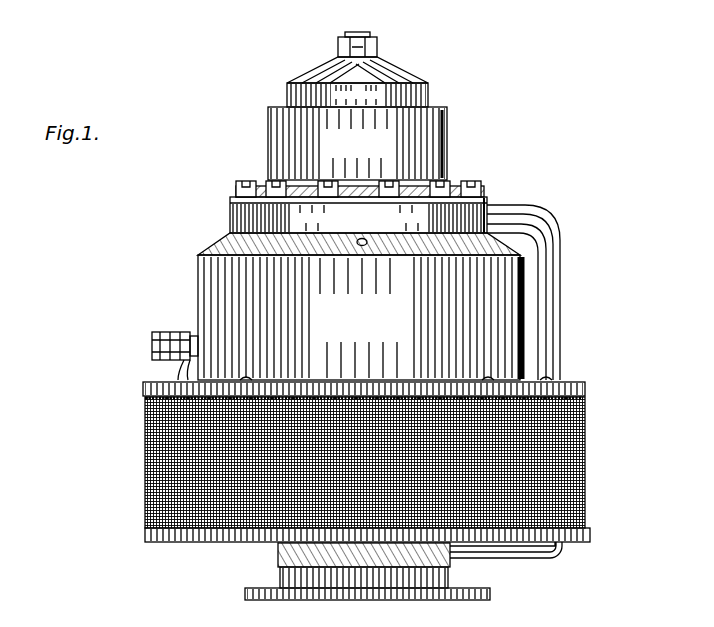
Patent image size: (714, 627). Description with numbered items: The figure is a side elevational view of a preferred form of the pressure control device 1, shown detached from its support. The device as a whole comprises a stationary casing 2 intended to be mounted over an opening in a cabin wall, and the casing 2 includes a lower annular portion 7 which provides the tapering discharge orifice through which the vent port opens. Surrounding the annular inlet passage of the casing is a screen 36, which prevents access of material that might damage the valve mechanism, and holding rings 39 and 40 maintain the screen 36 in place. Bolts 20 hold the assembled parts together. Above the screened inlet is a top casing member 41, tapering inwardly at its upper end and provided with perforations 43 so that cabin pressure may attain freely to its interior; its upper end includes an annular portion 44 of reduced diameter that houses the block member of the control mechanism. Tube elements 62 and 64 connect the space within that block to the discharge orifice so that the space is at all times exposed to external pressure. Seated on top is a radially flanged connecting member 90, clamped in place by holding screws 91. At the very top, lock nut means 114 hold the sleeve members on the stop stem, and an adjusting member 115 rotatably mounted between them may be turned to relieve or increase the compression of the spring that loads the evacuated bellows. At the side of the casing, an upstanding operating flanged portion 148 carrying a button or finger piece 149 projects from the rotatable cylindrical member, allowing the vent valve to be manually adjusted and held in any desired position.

The pressure control device 1 is at (492, 195).
The casing 2 is at (190, 289).
The lower annular portion 7 is at (283, 560).
The bolts 20 is at (547, 378).
The screen 36 is at (147, 462).
The holding ring 39 is at (586, 386).
The holding ring 40 is at (591, 533).
The top casing member 41 is at (524, 322).
The perforations 43 is at (357, 246).
The annular portion of reduced diameter 44 is at (238, 217).
The tube element 62 is at (557, 258).
The tube element 64 is at (533, 546).
The radially flanged connecting member 90 is at (447, 134).
The holding screws 91 is at (268, 184).
The lock nut means 114 is at (345, 42).
The adjusting member 115 is at (412, 82).
The operating flanged portion 148 is at (185, 378).
The button or finger piece 149 is at (160, 334).